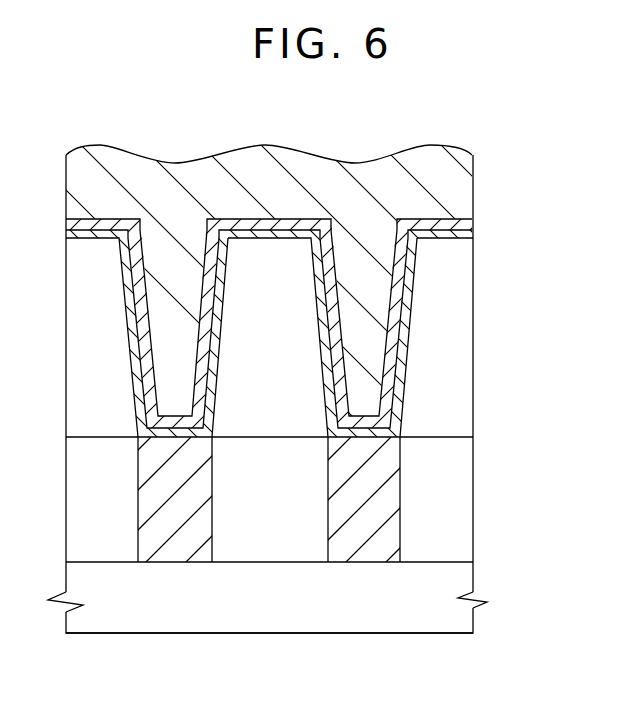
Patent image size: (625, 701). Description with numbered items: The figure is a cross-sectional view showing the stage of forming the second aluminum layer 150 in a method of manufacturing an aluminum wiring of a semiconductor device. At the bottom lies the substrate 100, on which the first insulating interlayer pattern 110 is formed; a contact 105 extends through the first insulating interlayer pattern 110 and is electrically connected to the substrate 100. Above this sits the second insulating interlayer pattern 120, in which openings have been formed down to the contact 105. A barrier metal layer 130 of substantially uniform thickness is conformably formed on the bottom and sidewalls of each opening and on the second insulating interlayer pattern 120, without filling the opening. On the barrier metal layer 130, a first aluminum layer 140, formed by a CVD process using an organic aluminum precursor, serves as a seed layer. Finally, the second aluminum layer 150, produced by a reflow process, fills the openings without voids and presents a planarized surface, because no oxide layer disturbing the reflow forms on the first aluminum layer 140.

The substrate 100 is at (460, 577).
The contact 105 is at (388, 465).
The first insulating interlayer pattern 110 is at (460, 519).
The second insulating interlayer pattern 120 is at (460, 382).
The barrier metal layer 130 is at (460, 233).
The first aluminum layer 140 is at (468, 223).
The second aluminum layer 150 is at (460, 178).